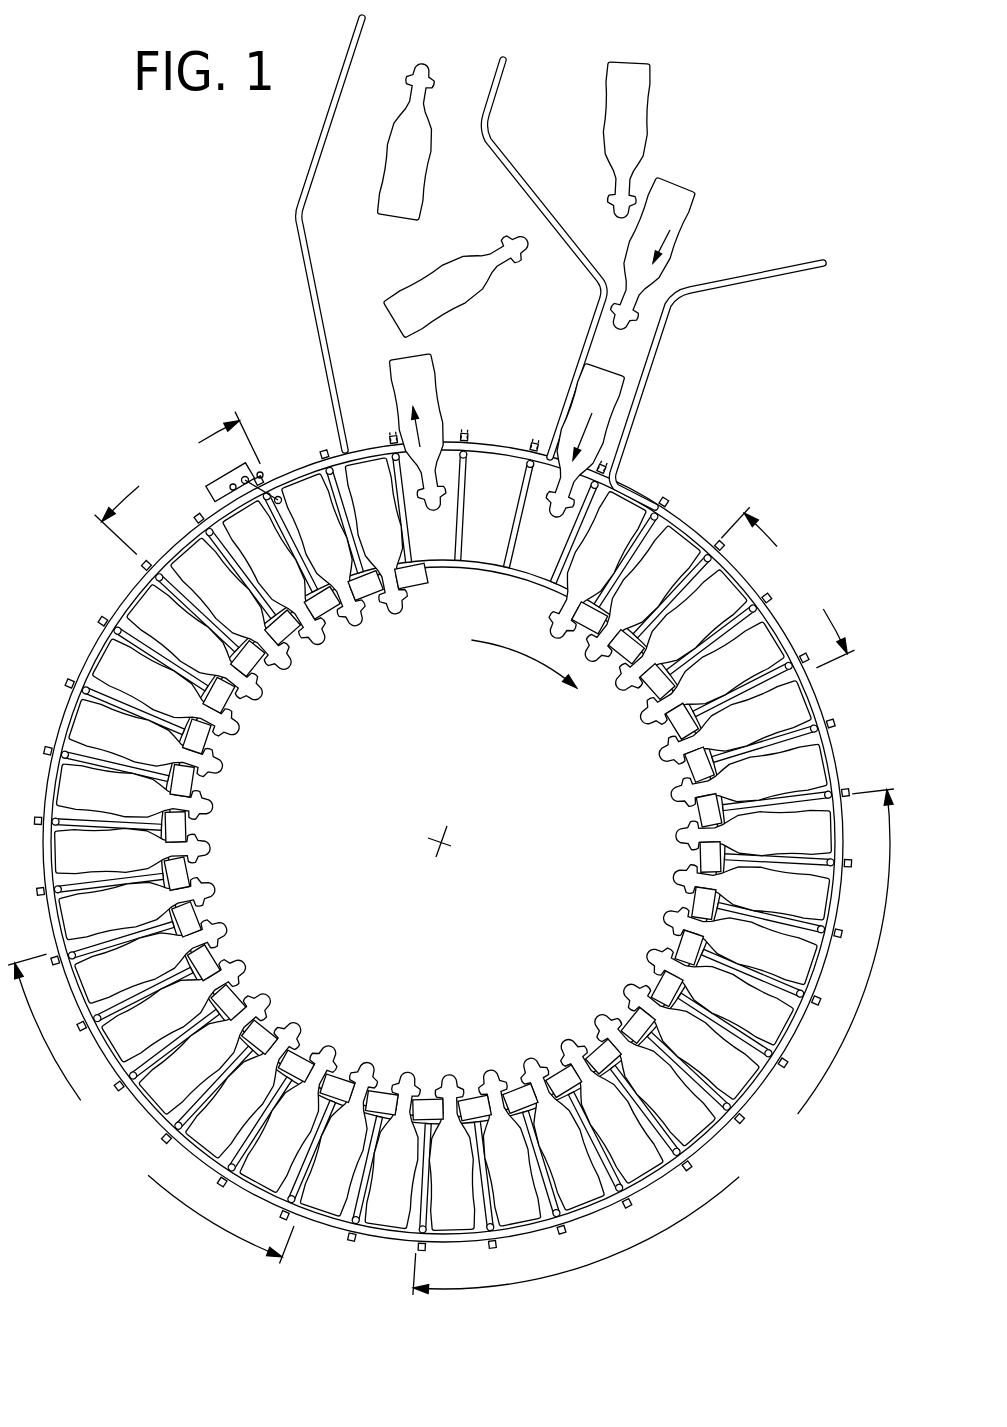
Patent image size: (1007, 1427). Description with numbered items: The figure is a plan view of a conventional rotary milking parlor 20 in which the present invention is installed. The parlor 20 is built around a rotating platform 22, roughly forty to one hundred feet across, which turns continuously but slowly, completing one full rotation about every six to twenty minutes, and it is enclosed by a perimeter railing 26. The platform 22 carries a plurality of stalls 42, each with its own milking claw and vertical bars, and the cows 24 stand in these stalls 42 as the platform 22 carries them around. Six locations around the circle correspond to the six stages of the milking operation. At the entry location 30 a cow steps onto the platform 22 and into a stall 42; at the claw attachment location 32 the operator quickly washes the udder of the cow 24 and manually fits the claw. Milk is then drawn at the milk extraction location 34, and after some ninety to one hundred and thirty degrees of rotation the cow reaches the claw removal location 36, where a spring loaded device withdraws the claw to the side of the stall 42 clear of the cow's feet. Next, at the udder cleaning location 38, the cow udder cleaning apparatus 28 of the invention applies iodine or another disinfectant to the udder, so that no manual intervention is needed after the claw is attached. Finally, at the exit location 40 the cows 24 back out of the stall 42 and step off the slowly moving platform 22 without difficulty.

The milking parlor 20 is at (180, 376).
The rotating platform 22 is at (453, 732).
The cows 24 is at (481, 842).
The perimeter railing 26 is at (652, 497).
The cow udder cleaning apparatus 28 is at (261, 432).
The entry location 30 is at (622, 407).
The claw attachment location 32 is at (787, 587).
The milk extraction location 34 is at (653, 1042).
The claw removal location 36 is at (151, 1108).
The udder cleaning location 38 is at (178, 483).
The exit location 40 is at (495, 395).
The stalls 42 is at (442, 838).